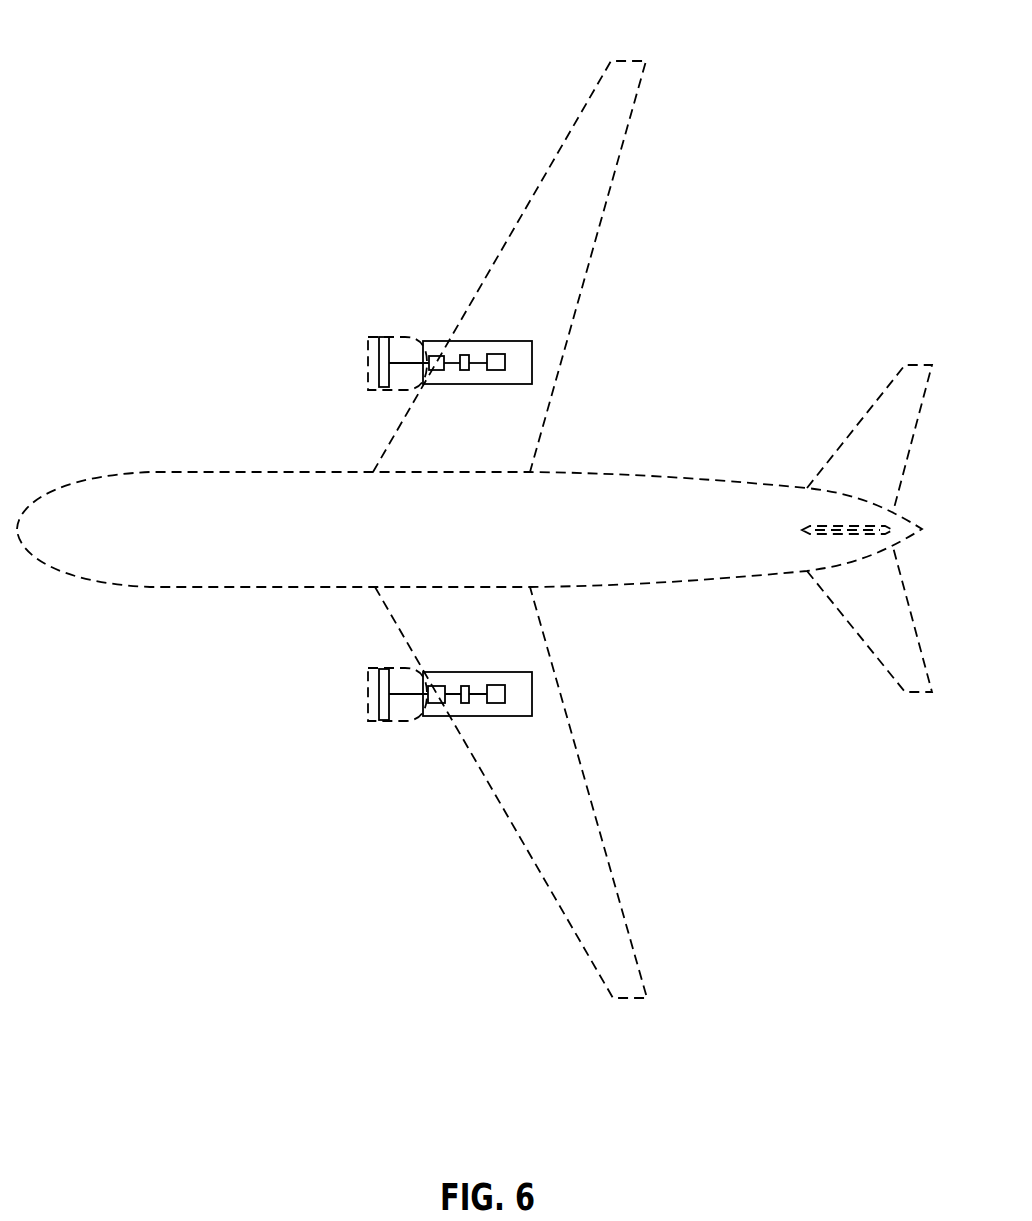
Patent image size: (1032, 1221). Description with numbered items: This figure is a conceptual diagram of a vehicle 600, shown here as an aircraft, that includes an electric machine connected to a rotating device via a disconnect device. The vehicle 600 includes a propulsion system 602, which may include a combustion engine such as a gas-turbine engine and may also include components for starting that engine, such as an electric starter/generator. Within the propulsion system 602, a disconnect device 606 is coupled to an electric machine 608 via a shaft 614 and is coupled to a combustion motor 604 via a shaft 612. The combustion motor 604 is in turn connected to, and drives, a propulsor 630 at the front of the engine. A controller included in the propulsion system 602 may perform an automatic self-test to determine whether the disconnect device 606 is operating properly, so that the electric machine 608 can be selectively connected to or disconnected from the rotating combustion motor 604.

The vehicle 600 is at (790, 152).
The propulsion system 602 is at (299, 305).
The combustion motor 604 is at (432, 372).
The disconnect device 606 is at (463, 355).
The electric machine 608 is at (497, 354).
The shaft 612 is at (455, 363).
The shaft 614 is at (478, 364).
The propulsor 630 is at (383, 386).